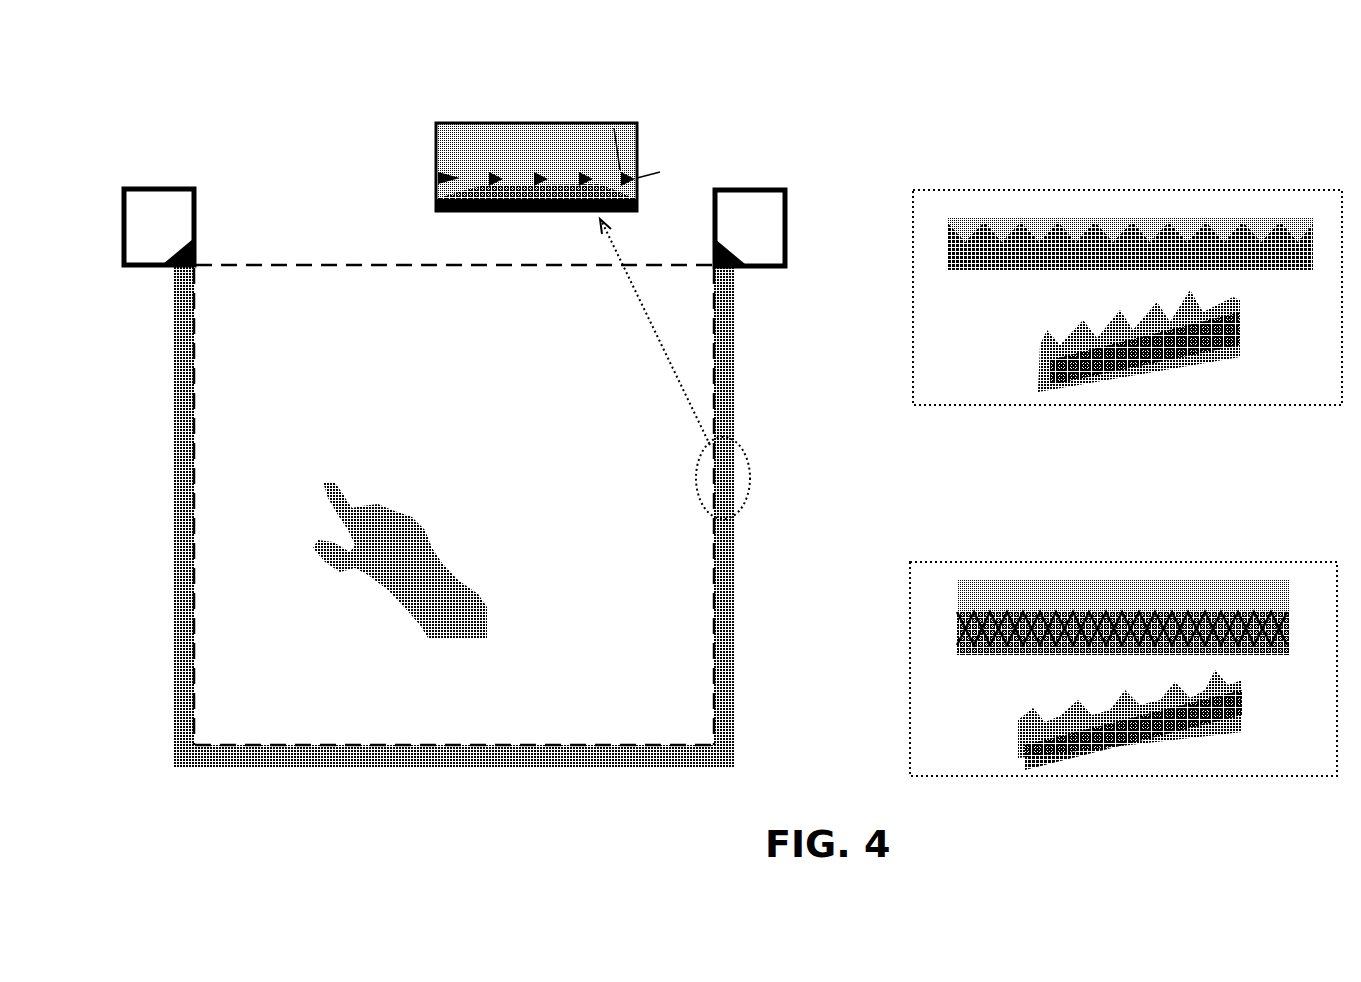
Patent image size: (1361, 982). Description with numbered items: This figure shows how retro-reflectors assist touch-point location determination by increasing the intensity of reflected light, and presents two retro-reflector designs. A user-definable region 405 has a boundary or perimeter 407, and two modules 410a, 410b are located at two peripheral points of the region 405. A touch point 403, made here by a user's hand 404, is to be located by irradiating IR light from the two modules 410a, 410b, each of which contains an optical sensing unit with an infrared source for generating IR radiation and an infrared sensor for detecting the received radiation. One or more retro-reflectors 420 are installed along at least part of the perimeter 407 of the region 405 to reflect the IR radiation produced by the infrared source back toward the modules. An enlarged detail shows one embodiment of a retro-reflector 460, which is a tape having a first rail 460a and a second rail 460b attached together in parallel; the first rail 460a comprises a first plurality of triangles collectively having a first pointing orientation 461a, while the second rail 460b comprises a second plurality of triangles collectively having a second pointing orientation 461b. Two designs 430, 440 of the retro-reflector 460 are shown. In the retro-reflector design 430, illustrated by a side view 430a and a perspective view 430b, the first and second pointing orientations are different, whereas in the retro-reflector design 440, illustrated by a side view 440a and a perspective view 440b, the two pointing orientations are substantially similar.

The touch point 403 is at (310, 496).
The hand 404 is at (413, 578).
The user-definable region 405 is at (670, 692).
The perimeter 407 is at (221, 255).
The module 410a is at (147, 207).
The module 410b is at (755, 250).
The retro-reflector 420 is at (345, 755).
The retro-reflector design 430 is at (1127, 250).
The side view 430a is at (1222, 225).
The perspective view 430b is at (1200, 340).
The retro-reflector design 440 is at (1123, 623).
The side view 440a is at (1167, 603).
The perspective view 440b is at (1160, 723).
The retro-reflector 460 is at (523, 148).
The first rail 460a is at (447, 162).
The second rail 460b is at (462, 193).
The first pointing orientation 461a is at (614, 128).
The second pointing orientation 461b is at (660, 172).